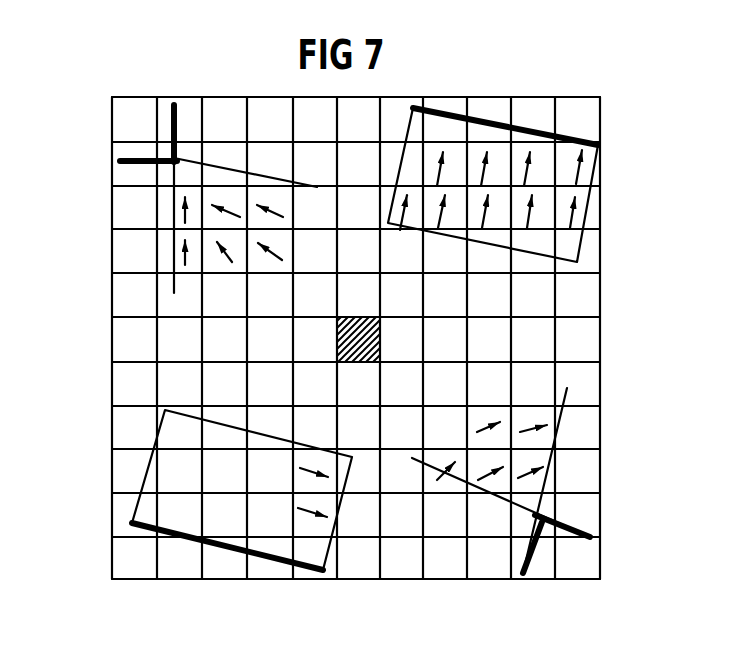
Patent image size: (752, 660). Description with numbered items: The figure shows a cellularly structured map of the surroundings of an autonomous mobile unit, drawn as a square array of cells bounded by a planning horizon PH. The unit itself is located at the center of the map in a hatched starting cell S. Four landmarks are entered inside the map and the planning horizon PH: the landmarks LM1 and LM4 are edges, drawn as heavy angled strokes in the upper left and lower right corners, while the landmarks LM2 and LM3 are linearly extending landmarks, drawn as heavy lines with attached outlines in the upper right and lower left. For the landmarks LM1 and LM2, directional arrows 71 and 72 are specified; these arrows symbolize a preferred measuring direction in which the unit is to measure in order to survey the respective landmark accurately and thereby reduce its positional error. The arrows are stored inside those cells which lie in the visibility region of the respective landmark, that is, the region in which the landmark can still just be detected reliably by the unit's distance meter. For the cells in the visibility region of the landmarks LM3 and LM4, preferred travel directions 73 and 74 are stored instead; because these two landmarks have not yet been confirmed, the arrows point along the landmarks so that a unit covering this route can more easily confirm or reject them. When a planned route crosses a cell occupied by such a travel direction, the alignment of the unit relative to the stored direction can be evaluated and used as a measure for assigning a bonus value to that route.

The planning horizon PH is at (600, 313).
The starting cell S is at (370, 340).
The landmark LM1 is at (135, 166).
The landmark LM2 is at (575, 135).
The landmark LM3 is at (277, 563).
The landmark LM4 is at (590, 538).
The directional arrows 71 is at (281, 262).
The directional arrows 72 is at (570, 228).
The preferred travel directions 73 is at (318, 512).
The preferred travel directions 74 is at (528, 474).